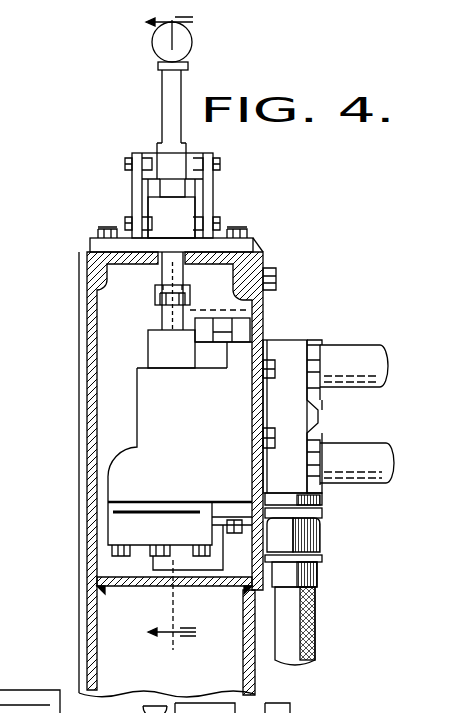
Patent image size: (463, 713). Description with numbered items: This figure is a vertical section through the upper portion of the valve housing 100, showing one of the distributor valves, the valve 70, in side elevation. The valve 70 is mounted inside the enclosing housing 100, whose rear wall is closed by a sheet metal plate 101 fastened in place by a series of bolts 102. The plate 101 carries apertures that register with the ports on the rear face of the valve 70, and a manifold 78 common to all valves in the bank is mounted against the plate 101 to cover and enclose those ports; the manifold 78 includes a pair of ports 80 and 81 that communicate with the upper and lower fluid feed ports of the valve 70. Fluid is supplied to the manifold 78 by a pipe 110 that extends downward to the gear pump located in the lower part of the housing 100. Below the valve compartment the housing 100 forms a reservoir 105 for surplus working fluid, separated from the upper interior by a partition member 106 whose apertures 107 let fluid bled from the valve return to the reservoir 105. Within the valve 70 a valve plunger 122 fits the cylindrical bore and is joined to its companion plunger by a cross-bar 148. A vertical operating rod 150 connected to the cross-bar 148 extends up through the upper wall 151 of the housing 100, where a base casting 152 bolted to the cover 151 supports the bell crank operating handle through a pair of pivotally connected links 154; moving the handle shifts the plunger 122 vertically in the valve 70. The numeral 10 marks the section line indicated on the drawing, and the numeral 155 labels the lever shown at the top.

The section line / viewing direction 10 is at (152, 333).
The valve 70 is at (180, 444).
The manifold 78 is at (297, 345).
The port 80 is at (348, 358).
The port 81 is at (336, 458).
The housing 100 is at (93, 380).
The sheet metal plate 101 is at (266, 307).
The bolt 102 is at (278, 272).
The reservoir 105 is at (181, 672).
The partition member 106 is at (110, 586).
The aperture 107 is at (180, 586).
The pipe 110 is at (312, 626).
The valve plunger 122 is at (170, 320).
The cross-bar 148 is at (158, 295).
The operating rod 150 is at (170, 198).
The upper wall 151 is at (252, 245).
The base casting 152 is at (213, 230).
The link 154 is at (135, 190).
The control lever 155 is at (182, 88).